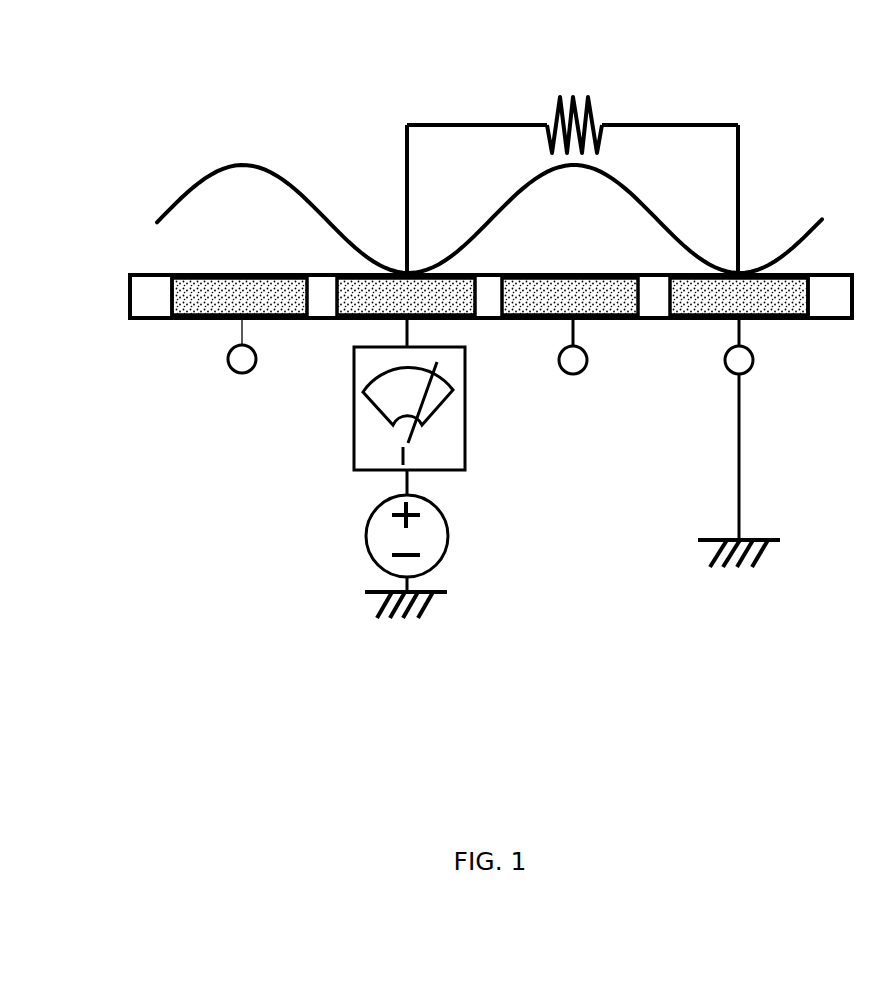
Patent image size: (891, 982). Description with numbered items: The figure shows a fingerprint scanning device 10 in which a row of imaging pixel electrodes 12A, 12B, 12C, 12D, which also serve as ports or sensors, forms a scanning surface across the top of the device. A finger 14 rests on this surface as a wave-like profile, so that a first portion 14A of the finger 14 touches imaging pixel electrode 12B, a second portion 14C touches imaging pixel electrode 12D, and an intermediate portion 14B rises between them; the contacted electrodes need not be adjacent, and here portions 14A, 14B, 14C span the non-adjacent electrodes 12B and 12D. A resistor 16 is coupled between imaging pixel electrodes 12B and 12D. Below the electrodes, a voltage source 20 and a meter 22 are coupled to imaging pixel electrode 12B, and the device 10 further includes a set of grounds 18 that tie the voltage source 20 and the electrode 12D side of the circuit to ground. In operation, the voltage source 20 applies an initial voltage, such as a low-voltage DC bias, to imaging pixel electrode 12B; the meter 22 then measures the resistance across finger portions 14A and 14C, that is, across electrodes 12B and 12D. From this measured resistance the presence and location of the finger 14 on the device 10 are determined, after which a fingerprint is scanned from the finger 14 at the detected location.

The fingerprint scanning device 10 is at (433, 317).
The imaging pixel electrode 12A is at (233, 275).
The imaging pixel electrode 12B is at (350, 275).
The imaging pixel electrode 12C is at (573, 275).
The imaging pixel electrode 12D is at (793, 275).
The finger 14 is at (223, 145).
The first portion of finger 14A is at (381, 275).
The portion of finger 14B is at (560, 173).
The second portion of finger 14C is at (726, 275).
The resistor 16 is at (573, 96).
The grounds 18 is at (437, 598).
The voltage source 20 is at (448, 535).
The meter 22 is at (465, 405).